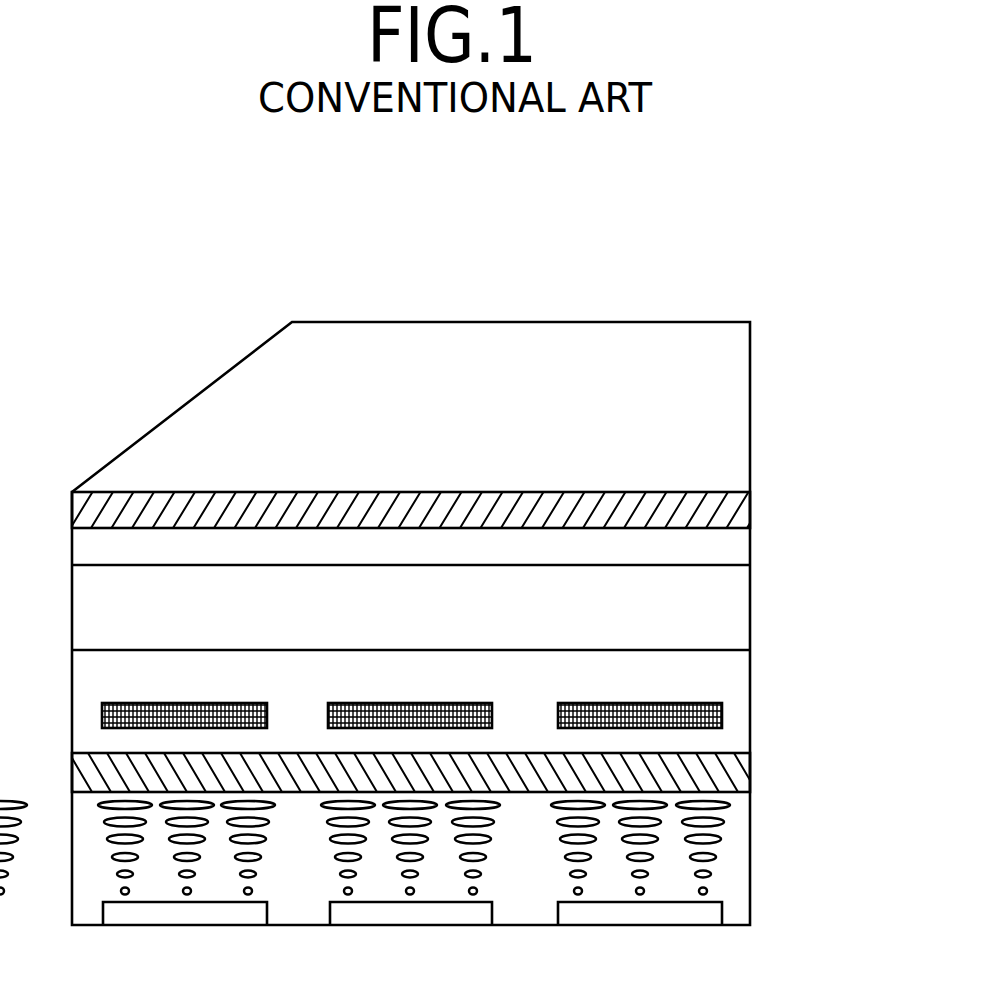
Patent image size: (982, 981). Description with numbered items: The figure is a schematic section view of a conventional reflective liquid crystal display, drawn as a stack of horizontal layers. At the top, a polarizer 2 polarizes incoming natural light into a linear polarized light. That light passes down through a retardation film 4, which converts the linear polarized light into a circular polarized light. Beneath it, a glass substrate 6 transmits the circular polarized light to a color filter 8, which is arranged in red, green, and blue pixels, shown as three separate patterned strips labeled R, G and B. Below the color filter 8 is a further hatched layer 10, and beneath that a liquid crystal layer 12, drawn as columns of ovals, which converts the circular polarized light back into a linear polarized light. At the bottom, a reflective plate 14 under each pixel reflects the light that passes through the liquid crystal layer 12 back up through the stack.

The polarizer 2 is at (743, 503).
The retardation film 4 is at (742, 548).
The glass substrate 6 is at (742, 608).
The color filter 8 is at (722, 700).
The lower substrate 10 is at (738, 775).
The liquid crystal layer 12 is at (722, 820).
The reflective plate 14 is at (722, 903).